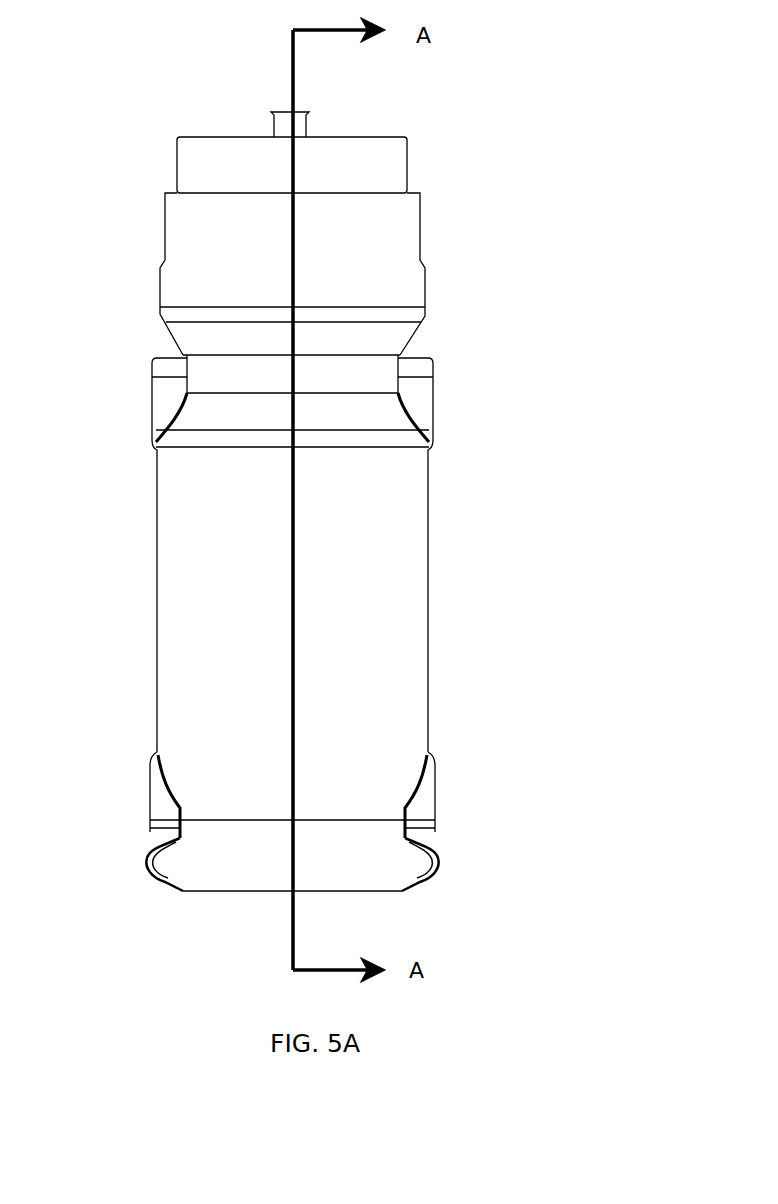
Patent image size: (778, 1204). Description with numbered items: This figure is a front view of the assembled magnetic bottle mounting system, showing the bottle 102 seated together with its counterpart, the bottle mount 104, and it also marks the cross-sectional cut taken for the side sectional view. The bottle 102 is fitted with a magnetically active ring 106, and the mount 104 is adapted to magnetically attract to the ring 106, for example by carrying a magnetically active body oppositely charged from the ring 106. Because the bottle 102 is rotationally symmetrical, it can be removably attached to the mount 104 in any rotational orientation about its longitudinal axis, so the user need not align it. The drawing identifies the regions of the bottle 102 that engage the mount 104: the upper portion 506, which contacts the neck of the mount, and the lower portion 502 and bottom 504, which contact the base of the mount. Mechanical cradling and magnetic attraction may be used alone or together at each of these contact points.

The bottle 102 is at (375, 240).
The bottle mount 104 is at (410, 387).
The magnetically active ring 106 is at (227, 377).
The lower portion 502 is at (147, 726).
The bottom 504 is at (225, 858).
The upper portion 506 is at (130, 384).